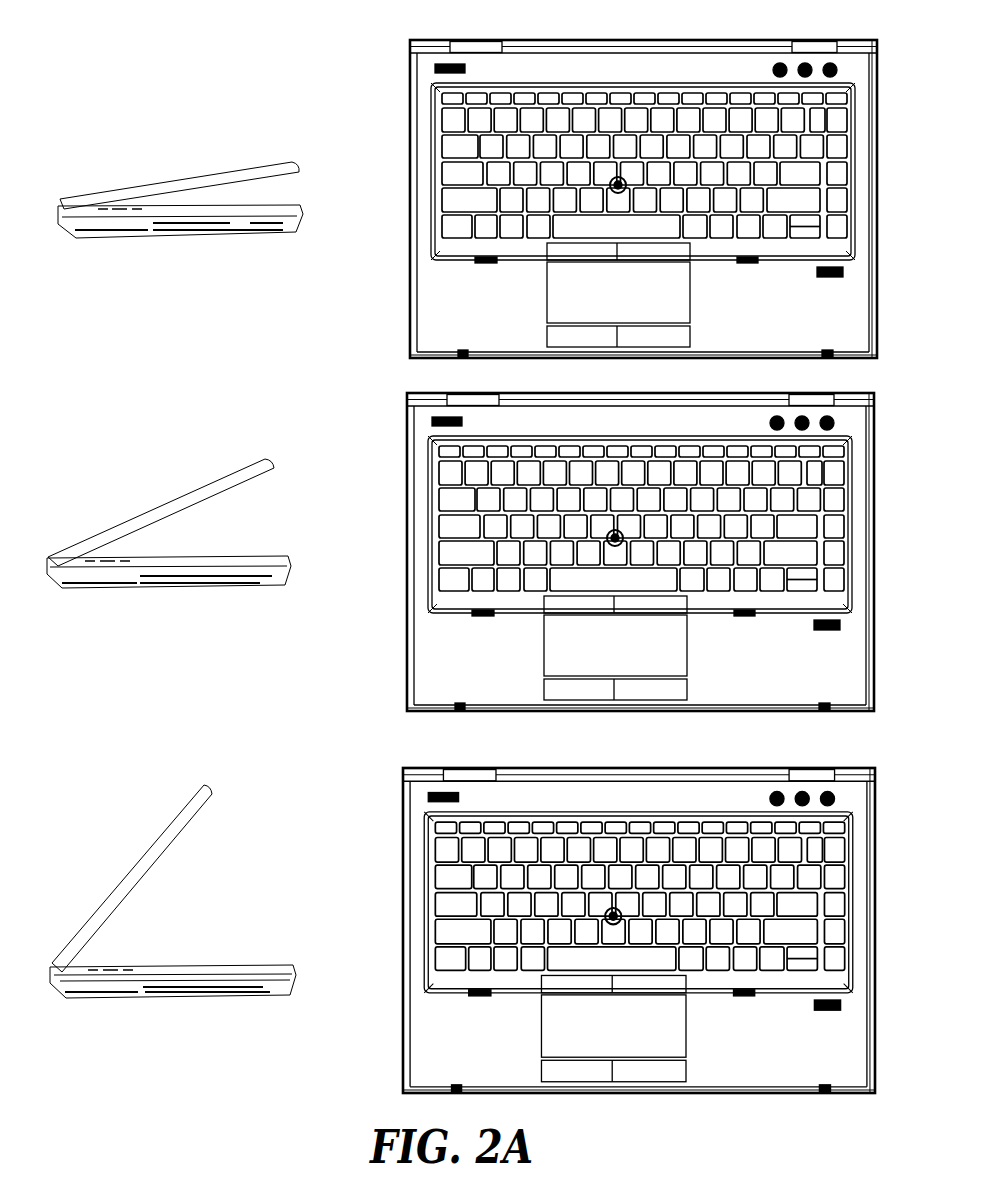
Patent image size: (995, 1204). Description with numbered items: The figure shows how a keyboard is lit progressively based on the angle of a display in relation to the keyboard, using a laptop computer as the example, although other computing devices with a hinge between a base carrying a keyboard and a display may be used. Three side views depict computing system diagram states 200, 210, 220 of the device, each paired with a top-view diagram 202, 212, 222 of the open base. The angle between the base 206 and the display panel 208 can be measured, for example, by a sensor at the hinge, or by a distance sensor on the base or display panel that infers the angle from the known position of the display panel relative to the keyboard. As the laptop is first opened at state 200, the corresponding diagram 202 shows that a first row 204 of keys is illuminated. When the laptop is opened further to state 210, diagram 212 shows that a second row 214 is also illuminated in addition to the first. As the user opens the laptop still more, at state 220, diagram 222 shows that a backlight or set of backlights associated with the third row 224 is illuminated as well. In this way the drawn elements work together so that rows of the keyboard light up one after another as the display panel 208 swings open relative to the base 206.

The computing system diagram state 200 is at (115, 183).
The diagram 202 is at (410, 85).
The first row 204 is at (450, 225).
The base 206 is at (280, 232).
The display panel 208 is at (310, 153).
The computing system diagram state 210 is at (140, 500).
The diagram 212 is at (407, 418).
The second row 214 is at (437, 552).
The computing system diagram state 220 is at (140, 836).
The diagram 222 is at (403, 785).
The third row 224 is at (433, 907).